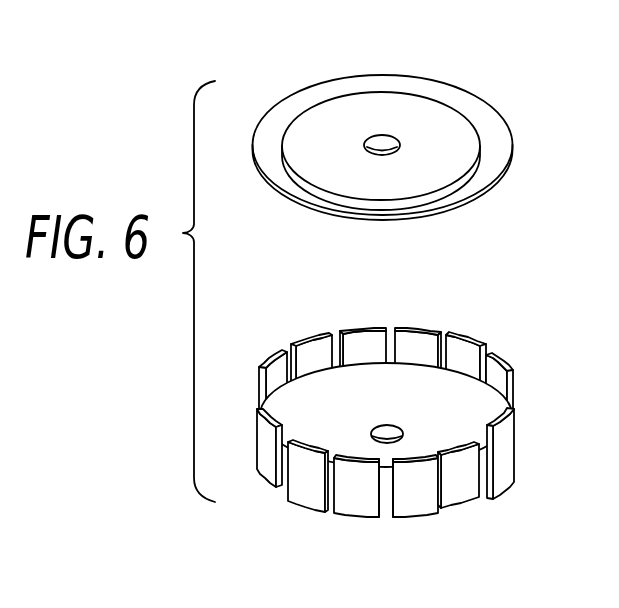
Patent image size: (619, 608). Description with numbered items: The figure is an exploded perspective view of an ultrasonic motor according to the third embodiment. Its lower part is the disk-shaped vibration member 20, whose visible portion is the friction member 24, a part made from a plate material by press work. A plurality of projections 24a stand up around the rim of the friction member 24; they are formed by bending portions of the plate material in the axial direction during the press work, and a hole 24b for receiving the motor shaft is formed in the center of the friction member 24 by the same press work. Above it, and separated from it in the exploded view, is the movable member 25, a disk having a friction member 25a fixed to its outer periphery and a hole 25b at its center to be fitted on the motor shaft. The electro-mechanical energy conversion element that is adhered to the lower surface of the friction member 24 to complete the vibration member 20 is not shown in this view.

The vibration member 20 is at (377, 428).
The friction member 24 is at (400, 428).
The projections 24a is at (458, 494).
The hole 24b is at (386, 432).
The movable member 25 is at (423, 119).
The friction member 25a is at (497, 158).
The hole 25b is at (381, 143).